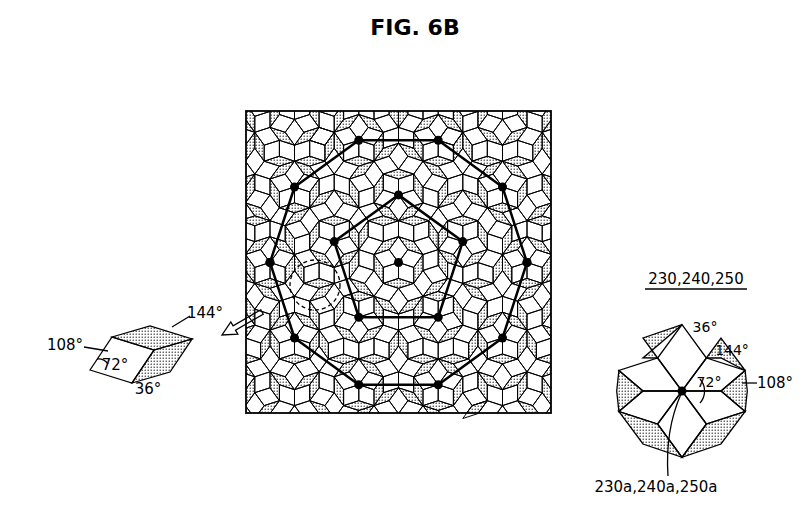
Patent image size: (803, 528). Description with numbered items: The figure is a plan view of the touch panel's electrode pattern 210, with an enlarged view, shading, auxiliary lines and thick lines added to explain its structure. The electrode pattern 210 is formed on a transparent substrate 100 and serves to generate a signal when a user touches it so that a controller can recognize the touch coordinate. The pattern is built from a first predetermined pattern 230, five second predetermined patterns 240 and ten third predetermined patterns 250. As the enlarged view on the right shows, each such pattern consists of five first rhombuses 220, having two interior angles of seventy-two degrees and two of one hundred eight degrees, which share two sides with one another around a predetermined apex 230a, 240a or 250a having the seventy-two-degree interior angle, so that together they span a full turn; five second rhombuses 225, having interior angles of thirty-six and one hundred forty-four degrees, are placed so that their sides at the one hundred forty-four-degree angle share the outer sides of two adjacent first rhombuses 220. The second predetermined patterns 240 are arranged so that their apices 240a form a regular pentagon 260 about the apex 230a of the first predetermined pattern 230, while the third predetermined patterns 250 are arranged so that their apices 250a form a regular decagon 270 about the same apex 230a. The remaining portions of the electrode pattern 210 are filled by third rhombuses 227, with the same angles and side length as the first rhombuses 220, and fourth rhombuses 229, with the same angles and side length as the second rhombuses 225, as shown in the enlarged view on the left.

The transparent substrate 100 is at (288, 110).
The electrode pattern 210 is at (323, 132).
The third predetermined pattern 250 is at (428, 120).
The predetermined apex of third predetermined pattern 250a is at (462, 135).
The first predetermined pattern 230 is at (533, 233).
The predetermined apex of first predetermined pattern 230a is at (548, 278).
The second predetermined pattern 240 is at (262, 184).
The predetermined apex of second predetermined pattern 240a is at (262, 230).
The regular pentagon 260 is at (400, 325).
The regular decagon 270 is at (474, 408).
The fourth rhombus 229 is at (186, 353).
The third rhombus 227 is at (126, 379).
The second rhombus 225 is at (712, 336).
The first rhombus 220 is at (735, 372).